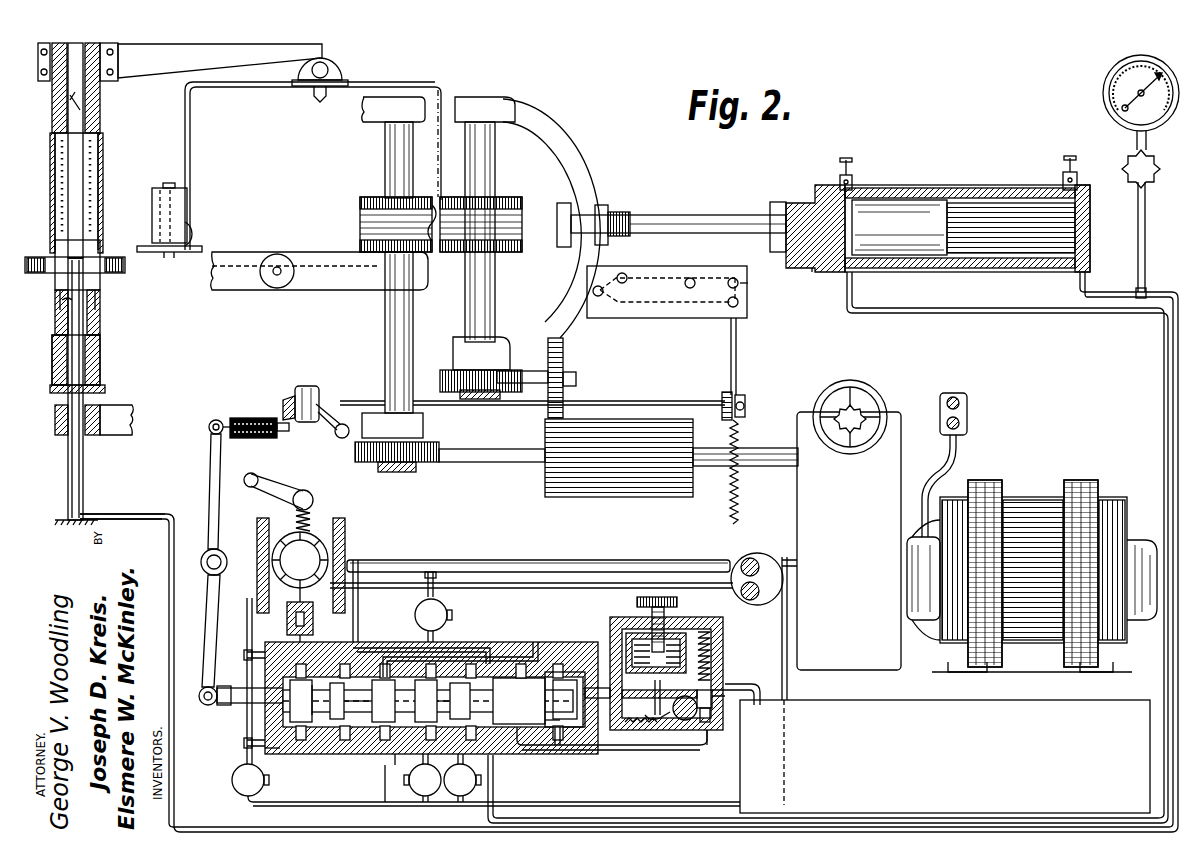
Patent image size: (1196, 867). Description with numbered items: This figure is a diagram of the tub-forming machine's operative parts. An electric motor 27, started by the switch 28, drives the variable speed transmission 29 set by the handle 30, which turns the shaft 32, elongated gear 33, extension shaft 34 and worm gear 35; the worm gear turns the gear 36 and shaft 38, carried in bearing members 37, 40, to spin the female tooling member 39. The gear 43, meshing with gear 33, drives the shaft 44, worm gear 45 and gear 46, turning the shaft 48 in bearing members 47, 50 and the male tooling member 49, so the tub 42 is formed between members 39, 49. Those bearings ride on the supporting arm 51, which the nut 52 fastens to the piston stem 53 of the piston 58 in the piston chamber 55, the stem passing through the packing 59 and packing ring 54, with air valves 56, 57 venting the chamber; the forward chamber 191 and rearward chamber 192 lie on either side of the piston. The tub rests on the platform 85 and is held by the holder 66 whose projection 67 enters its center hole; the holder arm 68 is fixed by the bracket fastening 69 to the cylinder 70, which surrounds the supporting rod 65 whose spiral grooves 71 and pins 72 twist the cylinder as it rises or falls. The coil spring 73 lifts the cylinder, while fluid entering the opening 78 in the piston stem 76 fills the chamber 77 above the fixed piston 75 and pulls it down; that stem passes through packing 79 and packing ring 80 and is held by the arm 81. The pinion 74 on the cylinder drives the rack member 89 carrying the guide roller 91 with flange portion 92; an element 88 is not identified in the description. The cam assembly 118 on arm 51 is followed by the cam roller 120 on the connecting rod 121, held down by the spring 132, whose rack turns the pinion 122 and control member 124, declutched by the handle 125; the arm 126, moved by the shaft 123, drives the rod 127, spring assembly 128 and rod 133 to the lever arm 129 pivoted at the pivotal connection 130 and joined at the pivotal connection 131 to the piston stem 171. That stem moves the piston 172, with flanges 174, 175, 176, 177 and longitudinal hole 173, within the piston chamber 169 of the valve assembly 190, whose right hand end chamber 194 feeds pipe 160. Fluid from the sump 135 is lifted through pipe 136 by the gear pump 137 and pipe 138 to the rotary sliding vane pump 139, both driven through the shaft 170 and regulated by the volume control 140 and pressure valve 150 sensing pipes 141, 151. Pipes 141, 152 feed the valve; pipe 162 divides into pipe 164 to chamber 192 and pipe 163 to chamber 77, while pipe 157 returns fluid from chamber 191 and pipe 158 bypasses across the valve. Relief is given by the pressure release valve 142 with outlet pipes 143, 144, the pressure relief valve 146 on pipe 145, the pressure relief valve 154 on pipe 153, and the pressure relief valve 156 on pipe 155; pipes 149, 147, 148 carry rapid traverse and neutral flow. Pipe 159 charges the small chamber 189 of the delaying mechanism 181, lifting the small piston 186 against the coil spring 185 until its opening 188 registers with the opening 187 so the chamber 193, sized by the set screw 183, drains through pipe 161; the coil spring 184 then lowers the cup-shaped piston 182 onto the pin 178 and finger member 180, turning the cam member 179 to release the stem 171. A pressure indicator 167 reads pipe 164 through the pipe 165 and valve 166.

The electric motor 27 is at (1035, 497).
The switch 28 is at (967, 410).
The variable speed transmission 29 is at (901, 450).
The handle 30 is at (882, 395).
The shaft 32 is at (756, 448).
The elongated gear 33 is at (640, 497).
The extension shaft 34 is at (500, 462).
The worm gear 35 is at (400, 472).
The gear 36 is at (372, 462).
The bearing member 37 is at (423, 425).
The shaft 38 is at (413, 330).
The female tooling member 39 is at (360, 222).
The bearing member 40 is at (372, 118).
The vessel or tub 42 is at (441, 90).
The gear 43 is at (565, 360).
The shaft 44 is at (535, 375).
The worm gear 45 is at (500, 396).
The gear 46 is at (443, 385).
The bearing member 47 is at (453, 355).
The shaft 48 is at (495, 310).
The male tooling member 49 is at (536, 240).
The bearing member 50 is at (512, 100).
The supporting arm 51 is at (573, 165).
The nut 52 is at (562, 205).
The piston stem 53 is at (668, 215).
The packing ring 54 is at (770, 210).
The piston chamber 55 is at (880, 190).
The air valve 56 is at (840, 170).
The air valve 57 is at (1063, 170).
The piston 58 is at (920, 205).
The packing 59 is at (805, 200).
The supporting rod 65 is at (68, 170).
The holder 66 is at (348, 80).
The projection 67 is at (320, 103).
The holder arm 68 is at (255, 58).
The bracket fastening 69 is at (118, 80).
The cylinder 70 is at (100, 100).
The spiral grooves 71 is at (68, 97).
The pins 72 is at (62, 128).
The expansive coil spring 73 is at (100, 152).
The elongated gear or pinion 74 is at (103, 180).
The piston 75 is at (55, 245).
The piston stem 76 is at (84, 303).
The chamber 77 is at (88, 324).
The opening 78 is at (62, 295).
The packing 79 is at (98, 355).
The packing ring 80 is at (100, 392).
The arm 81 is at (100, 432).
The platform 85 is at (342, 290).
The roller 88 is at (288, 286).
The rack member 89 is at (130, 240).
The guide roller 91 is at (152, 206).
The flange portion 92 is at (150, 246).
The cam assembly 118 is at (592, 292).
The cam roller 120 is at (748, 288).
The connecting rod 121 is at (736, 355).
The pinion 122 is at (745, 400).
The shaft 123 is at (662, 390).
The control member 124 is at (312, 386).
The handle 125 is at (340, 438).
The arm 126 is at (292, 420).
The rod 127 is at (282, 431).
The spring assembly 128 is at (252, 438).
The lever arm 129 is at (210, 480).
The pivotal connection 130 is at (202, 558).
The pivotal connection 131 is at (200, 702).
The spring 132 is at (737, 490).
The rod 133 is at (218, 420).
The sump 135 is at (985, 800).
The pipe 136 is at (788, 688).
The gear pump 137 is at (752, 605).
The pipe 138 is at (525, 588).
The rotary sliding vane pump 139 is at (310, 530).
The volume control 140 is at (275, 485).
The pipe 141 is at (247, 630).
The pressure release valve 142 is at (232, 786).
The outlet pipe 143 is at (320, 802).
The outlet pipe 144 is at (612, 790).
The pipe 145 is at (436, 598).
The pressure relief valve 146 is at (415, 618).
The pipe 147 is at (500, 642).
The pipe 148 is at (436, 630).
The pipe 149 is at (368, 600).
The pressure valve 150 is at (313, 616).
The pipe 151 is at (287, 616).
The pipe 152 is at (268, 754).
The pipe 153 is at (427, 775).
The pressure relief valve 154 is at (418, 808).
The pipe 155 is at (465, 775).
The pressure relief valve 156 is at (468, 808).
The pipe 157 is at (940, 312).
The pipe 158 is at (395, 648).
The pipe 159 is at (665, 745).
The pipe 160 is at (610, 640).
The pipe 161 is at (742, 682).
The pipe 162 is at (385, 790).
The pipe 163 is at (155, 514).
The pipe 164 is at (1176, 292).
The pipe 165 is at (1146, 232).
The valve 166 is at (1155, 172).
The pressure indicator 167 is at (1108, 105).
The piston chamber 169 is at (395, 760).
The shaft 170 is at (650, 548).
The piston stem 171 is at (240, 703).
The piston 172 is at (432, 699).
The longitudinal hole 173 is at (446, 686).
The flange 174 is at (416, 695).
The flange 175 is at (360, 692).
The flange 176 is at (449, 692).
The flange 177 is at (536, 717).
The pin 178 is at (660, 684).
The cam member 179 is at (685, 707).
The finger member 180 is at (650, 713).
The delaying mechanism 181 is at (620, 600).
The cup-shaped piston 182 is at (622, 645).
The set screw 183 is at (677, 602).
The coil spring 184 is at (682, 622).
The coil spring 185 is at (722, 640).
The small piston 186 is at (722, 656).
The opening 187 is at (722, 672).
The opening 188 is at (714, 693).
The small chamber 189 is at (707, 735).
The valve assembly 190 is at (355, 772).
The forward chamber 191 is at (830, 268).
The rearward chamber 192 is at (1010, 200).
The chamber 193 is at (659, 687).
The right hand end chamber 194 is at (558, 754).